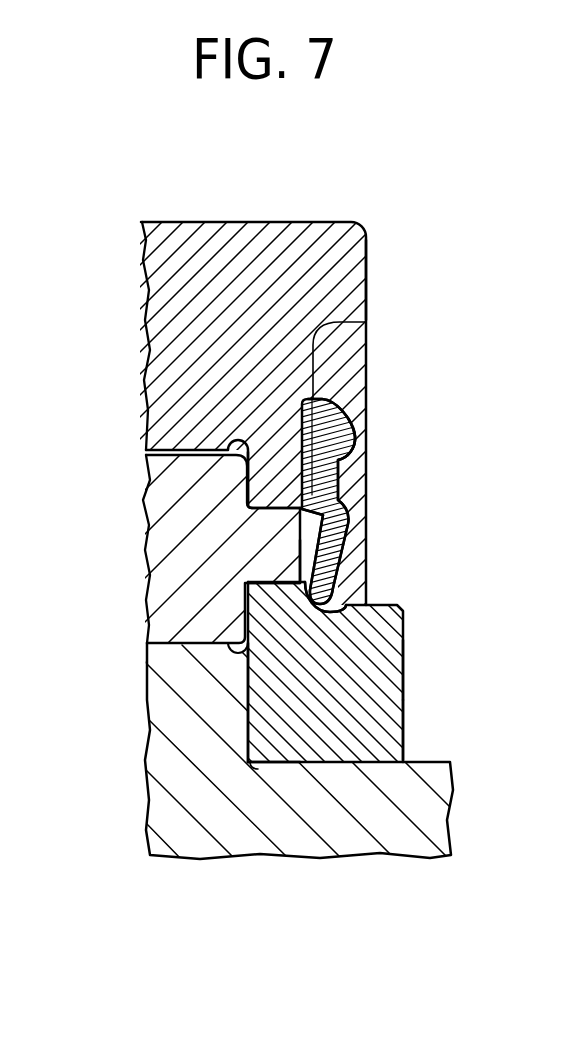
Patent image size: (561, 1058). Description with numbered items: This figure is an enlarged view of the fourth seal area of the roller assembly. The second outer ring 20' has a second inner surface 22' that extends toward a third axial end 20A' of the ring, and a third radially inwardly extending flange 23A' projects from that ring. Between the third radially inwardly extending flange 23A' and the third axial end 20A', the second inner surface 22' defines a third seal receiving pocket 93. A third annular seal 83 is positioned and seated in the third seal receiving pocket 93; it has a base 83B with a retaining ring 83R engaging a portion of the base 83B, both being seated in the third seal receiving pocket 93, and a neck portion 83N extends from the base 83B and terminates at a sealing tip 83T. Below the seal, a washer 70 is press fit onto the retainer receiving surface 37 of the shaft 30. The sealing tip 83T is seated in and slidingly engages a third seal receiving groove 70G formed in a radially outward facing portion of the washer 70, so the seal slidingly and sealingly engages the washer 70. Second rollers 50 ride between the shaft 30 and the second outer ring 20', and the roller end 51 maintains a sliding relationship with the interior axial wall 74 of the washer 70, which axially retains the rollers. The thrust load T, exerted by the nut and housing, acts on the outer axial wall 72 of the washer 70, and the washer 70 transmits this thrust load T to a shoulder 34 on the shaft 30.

The second outer ring 20' is at (271, 388).
The third axial end 20A' is at (423, 280).
The third seal receiving pocket 93 is at (347, 315).
The third radially inwardly extending flange 23A' is at (176, 435).
The second inner surface 22' is at (190, 513).
The second rollers 50 is at (167, 560).
The roller end 51 is at (251, 592).
The washer 70 is at (405, 666).
The third seal receiving groove 70G is at (345, 604).
The outer axial wall 72 is at (405, 683).
The retainer receiving surface 37 is at (405, 729).
The thrust load T is at (404, 703).
The shaft 30 is at (348, 838).
The interior axial wall 74 is at (248, 681).
The shoulder 34 is at (278, 763).
The third annular seal 83 is at (345, 497).
The retaining ring 83R is at (347, 418).
The base 83B is at (347, 440).
The neck portion 83N is at (340, 470).
The sealing tip 83T is at (344, 527).